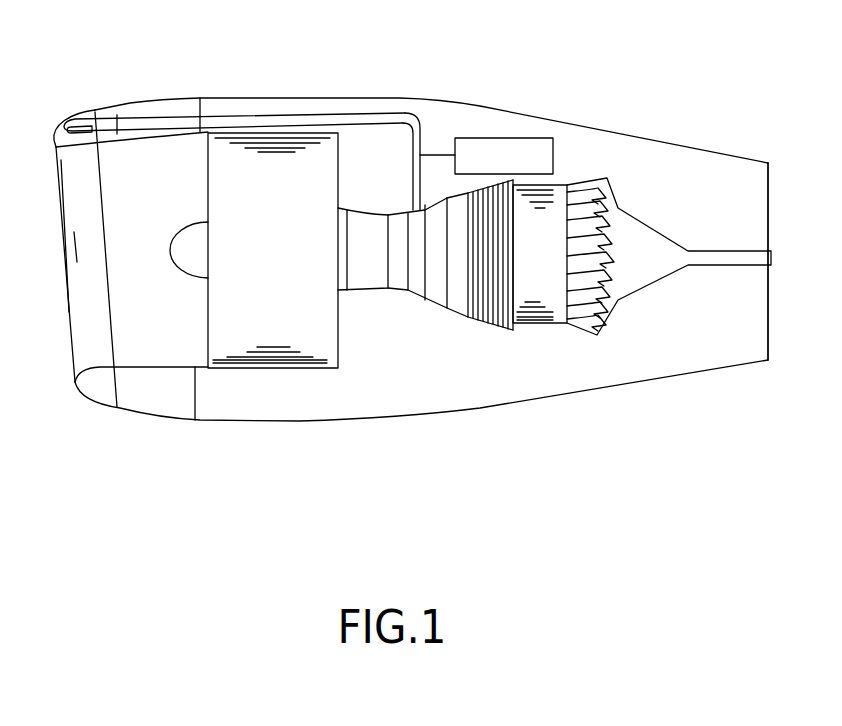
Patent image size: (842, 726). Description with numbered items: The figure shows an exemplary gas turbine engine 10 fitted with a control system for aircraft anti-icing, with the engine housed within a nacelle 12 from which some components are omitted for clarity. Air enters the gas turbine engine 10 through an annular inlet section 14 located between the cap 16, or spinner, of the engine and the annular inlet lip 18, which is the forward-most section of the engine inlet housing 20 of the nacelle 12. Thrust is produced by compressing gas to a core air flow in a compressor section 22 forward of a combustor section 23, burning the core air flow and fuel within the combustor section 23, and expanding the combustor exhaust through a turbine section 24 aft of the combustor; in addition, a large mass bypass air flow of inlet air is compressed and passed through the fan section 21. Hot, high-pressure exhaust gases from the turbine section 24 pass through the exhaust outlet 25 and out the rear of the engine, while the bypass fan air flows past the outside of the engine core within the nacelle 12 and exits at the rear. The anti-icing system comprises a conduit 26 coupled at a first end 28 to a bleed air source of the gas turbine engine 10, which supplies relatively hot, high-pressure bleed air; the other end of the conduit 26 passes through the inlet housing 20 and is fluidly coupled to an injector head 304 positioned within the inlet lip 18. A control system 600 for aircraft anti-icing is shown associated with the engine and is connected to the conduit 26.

The gas turbine engine 10 is at (413, 92).
The nacelle 12 is at (580, 397).
The annular inlet section 14 is at (118, 214).
The cap 16 is at (187, 270).
The annular inlet lip 18 is at (82, 397).
The engine inlet housing 20 is at (143, 102).
The fan section 21 is at (243, 347).
The compressor section 22 is at (345, 313).
The combustor section 23 is at (418, 277).
The turbine section 24 is at (487, 332).
The exhaust outlet 25 is at (628, 312).
The conduit 26 is at (248, 118).
The first end 28 is at (413, 207).
The injector head 304 is at (88, 119).
The control system 600 is at (485, 167).